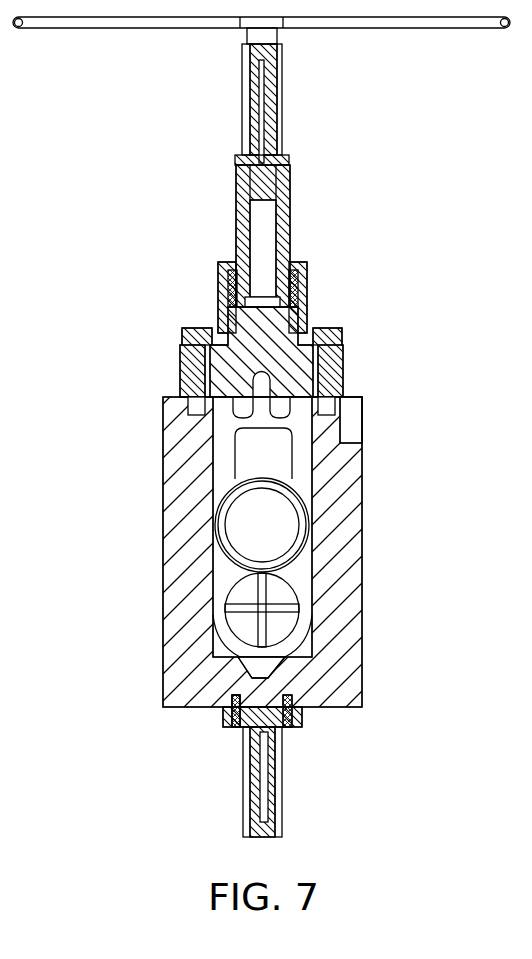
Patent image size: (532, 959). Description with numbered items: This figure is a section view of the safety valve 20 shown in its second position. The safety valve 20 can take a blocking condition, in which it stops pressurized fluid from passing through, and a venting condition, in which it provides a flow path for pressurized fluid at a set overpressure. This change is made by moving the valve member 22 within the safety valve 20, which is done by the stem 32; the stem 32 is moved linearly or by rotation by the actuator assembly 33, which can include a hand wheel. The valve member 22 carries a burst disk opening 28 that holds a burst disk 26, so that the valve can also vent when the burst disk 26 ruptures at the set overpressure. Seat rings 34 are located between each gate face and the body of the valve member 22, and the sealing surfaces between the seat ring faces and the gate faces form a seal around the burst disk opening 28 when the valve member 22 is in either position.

The safety valve 20 is at (283, 501).
The valve member 22 is at (225, 578).
The burst disk 26 is at (282, 590).
The burst disk opening 28 is at (290, 625).
The stem 32 is at (262, 224).
The actuator assembly 33 is at (182, 82).
The seat rings 34 is at (298, 558).